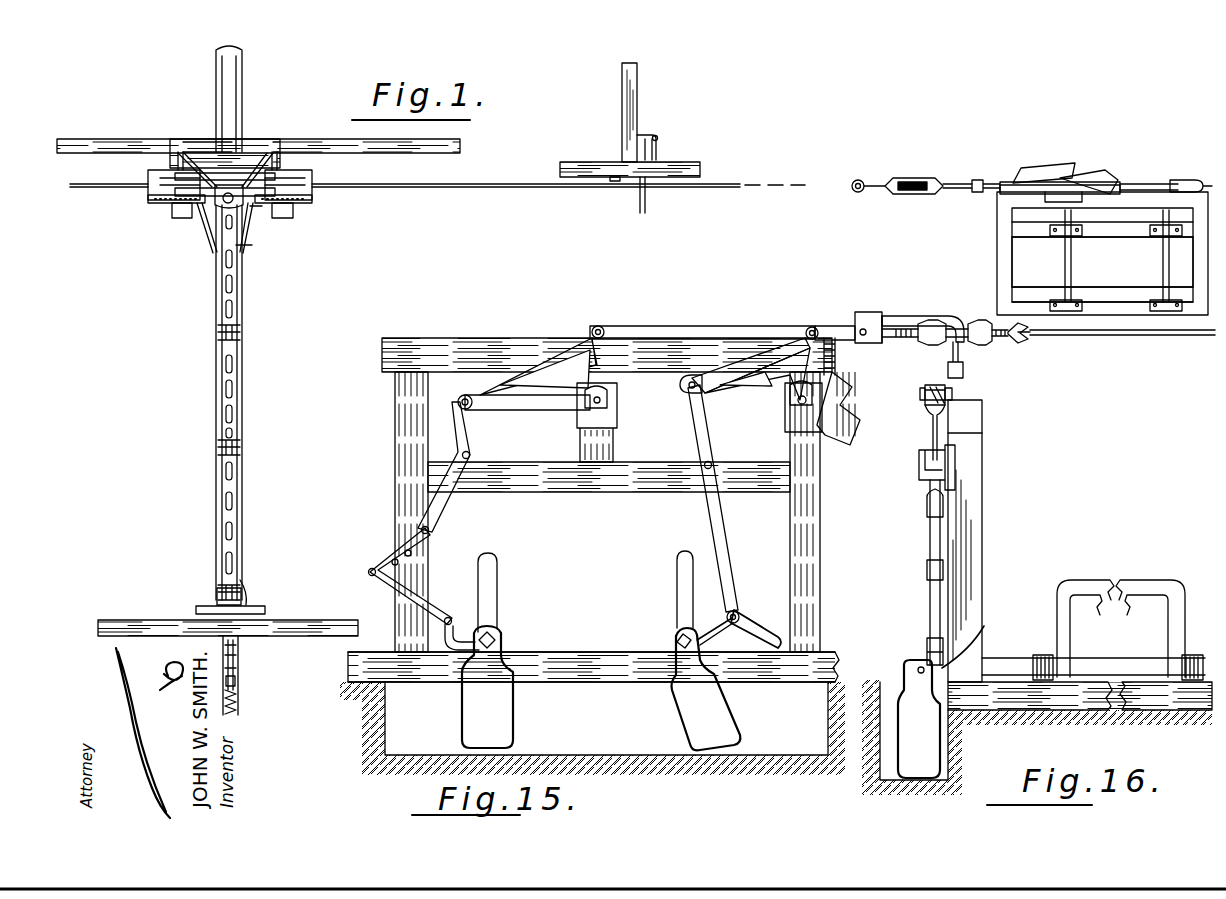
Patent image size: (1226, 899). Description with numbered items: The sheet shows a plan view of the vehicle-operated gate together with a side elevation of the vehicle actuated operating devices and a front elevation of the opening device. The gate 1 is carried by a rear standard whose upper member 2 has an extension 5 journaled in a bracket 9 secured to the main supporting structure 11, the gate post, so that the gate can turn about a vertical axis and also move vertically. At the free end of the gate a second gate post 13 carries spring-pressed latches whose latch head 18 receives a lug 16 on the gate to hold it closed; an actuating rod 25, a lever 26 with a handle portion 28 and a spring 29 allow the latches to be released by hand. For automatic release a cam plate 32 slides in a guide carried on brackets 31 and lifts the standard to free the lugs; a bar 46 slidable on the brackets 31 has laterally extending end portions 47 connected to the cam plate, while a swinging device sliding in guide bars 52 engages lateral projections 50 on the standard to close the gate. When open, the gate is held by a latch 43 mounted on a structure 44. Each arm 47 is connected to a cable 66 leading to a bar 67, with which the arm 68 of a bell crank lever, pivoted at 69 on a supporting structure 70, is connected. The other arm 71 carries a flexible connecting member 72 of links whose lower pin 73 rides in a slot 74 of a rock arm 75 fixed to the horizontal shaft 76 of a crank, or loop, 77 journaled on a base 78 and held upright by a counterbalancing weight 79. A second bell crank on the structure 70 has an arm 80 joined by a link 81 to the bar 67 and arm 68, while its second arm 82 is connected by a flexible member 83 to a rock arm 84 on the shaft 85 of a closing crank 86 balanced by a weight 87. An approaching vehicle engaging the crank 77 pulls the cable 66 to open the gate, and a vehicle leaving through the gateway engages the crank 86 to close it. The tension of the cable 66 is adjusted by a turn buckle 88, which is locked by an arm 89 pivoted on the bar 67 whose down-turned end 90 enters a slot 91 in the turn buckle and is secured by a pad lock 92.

In FIG. 1, the gate 1 is at (216, 305).
In FIG. 1, the upper member of the standard 2 is at (255, 222).
In FIG. 1, the extension 5 is at (210, 232).
In FIG. 1, the bracket 9 is at (250, 240).
In FIG. 1, the main supporting structure 11 is at (270, 140).
In FIG. 1, the second supporting structure 13 is at (202, 627).
In FIG. 1, the lug 16 is at (252, 605).
In FIG. 1, the latch head 18 is at (265, 609).
In FIG. 1, the actuating rod 25 is at (237, 682).
In FIG. 1, the lever 26 is at (240, 656).
In FIG. 1, the handle portion 28 is at (212, 603).
In FIG. 1, the spring 29 is at (238, 705).
In FIG. 1, the brackets 31 is at (178, 218).
In FIG. 1, the cam plate 32 is at (286, 218).
In FIG. 1, the latch 43 is at (645, 205).
In FIG. 1, the structure 44 is at (640, 120).
In FIG. 1, the bar 46 is at (292, 175).
In FIG. 1, the end portions 47 is at (318, 193).
In FIG. 1, the lateral projections 50 is at (205, 210).
In FIG. 1, the guide bars 52 is at (203, 160).
In FIG. 1, the cable 66 is at (103, 187).
In FIG. 1, the bar 67 is at (991, 180).
In FIG. 15, the bar 67 is at (835, 326).
In FIG. 16, the bar 67 is at (923, 388).
In FIG. 15, the arm of bell crank lever 68 is at (838, 352).
In FIG. 16, the arm of bell crank lever 68 is at (930, 430).
In FIG. 15, the pivot 69 is at (800, 400).
In FIG. 16, the pivot 69 is at (920, 470).
In FIG. 1, the supporting structure 70 is at (1005, 205).
In FIG. 15, the supporting structure 70 is at (812, 485).
In FIG. 16, the supporting structure 70 is at (970, 475).
In FIG. 1, the arm of bell crank lever 71 is at (1040, 175).
In FIG. 15, the arm of bell crank lever 71 is at (738, 395).
In FIG. 1, the connecting member 72 is at (1100, 178).
In FIG. 15, the connecting member 72 is at (718, 522).
In FIG. 16, the connecting member 72 is at (930, 605).
In FIG. 15, the pin 73 is at (740, 608).
In FIG. 15, the slot 74 is at (757, 624).
In FIG. 15, the rock arm 75 is at (715, 625).
In FIG. 16, the rock arm 75 is at (942, 668).
In FIG. 15, the shaft 76 is at (676, 640).
In FIG. 16, the shaft 76 is at (1008, 662).
In FIG. 1, the crank 77 is at (1065, 268).
In FIG. 15, the crank 77 is at (677, 580).
In FIG. 16, the crank 77 is at (1108, 590).
In FIG. 1, the base 78 is at (1105, 237).
In FIG. 15, the base 78 is at (608, 682).
In FIG. 16, the base 78 is at (1090, 690).
In FIG. 15, the counter balancing weight 79 is at (706, 689).
In FIG. 16, the counter balancing weight 79 is at (919, 719).
In FIG. 15, the arm of second bell crank lever 80 is at (600, 360).
In FIG. 1, the link 81 is at (1085, 182).
In FIG. 15, the link 81 is at (703, 326).
In FIG. 16, the link 81 is at (952, 394).
In FIG. 1, the second arm of second bell crank lever 82 is at (1143, 182).
In FIG. 15, the second arm of second bell crank lever 82 is at (529, 408).
In FIG. 1, the flexible connecting member 83 is at (1192, 180).
In FIG. 15, the flexible connecting member 83 is at (450, 515).
In FIG. 15, the hook 84 is at (457, 620).
In FIG. 15, the shaft 85 is at (500, 640).
In FIG. 1, the crank 86 is at (1163, 268).
In FIG. 15, the crank 86 is at (497, 600).
In FIG. 15, the weight 87 is at (502, 715).
In FIG. 1, the turn buckle 88 is at (886, 190).
In FIG. 15, the turn buckle 88 is at (975, 322).
In FIG. 1, the arm 89 is at (953, 182).
In FIG. 15, the arm 89 is at (912, 300).
In FIG. 15, the down-turned end portion 90 is at (960, 325).
In FIG. 1, the slot 91 is at (910, 192).
In FIG. 15, the pad lock 92 is at (950, 355).